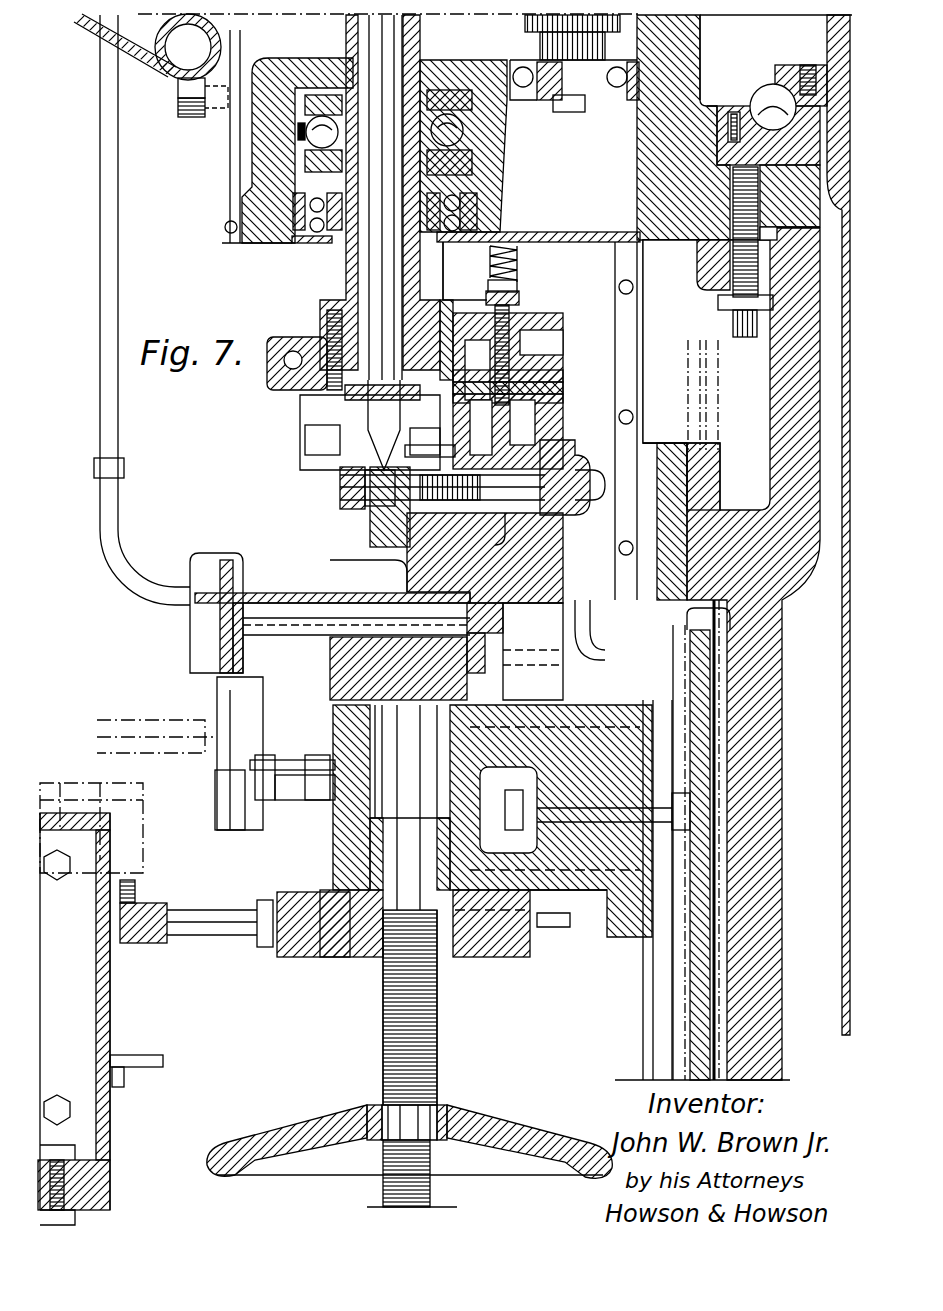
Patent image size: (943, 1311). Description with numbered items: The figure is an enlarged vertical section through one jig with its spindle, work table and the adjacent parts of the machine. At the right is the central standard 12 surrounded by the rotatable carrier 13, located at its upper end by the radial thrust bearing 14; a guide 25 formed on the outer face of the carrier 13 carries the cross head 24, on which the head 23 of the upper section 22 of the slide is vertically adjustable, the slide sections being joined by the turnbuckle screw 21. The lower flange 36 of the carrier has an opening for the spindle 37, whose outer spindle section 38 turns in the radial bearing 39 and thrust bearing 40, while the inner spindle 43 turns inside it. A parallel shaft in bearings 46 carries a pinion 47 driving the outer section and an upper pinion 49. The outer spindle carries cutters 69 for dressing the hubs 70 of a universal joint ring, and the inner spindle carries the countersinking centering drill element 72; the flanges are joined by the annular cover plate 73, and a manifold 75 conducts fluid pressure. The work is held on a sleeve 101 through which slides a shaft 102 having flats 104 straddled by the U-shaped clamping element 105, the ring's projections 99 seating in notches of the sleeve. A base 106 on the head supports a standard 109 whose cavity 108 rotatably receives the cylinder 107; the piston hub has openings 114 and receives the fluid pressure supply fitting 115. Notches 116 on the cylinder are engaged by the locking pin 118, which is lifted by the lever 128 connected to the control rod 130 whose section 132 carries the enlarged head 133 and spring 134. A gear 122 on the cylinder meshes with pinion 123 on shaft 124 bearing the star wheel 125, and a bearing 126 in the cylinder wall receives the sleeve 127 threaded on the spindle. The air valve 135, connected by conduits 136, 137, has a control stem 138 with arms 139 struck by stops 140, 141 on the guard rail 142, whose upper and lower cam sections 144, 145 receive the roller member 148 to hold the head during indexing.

The standard 12 is at (822, 552).
The rotatable carrier 13 is at (775, 632).
The radial thrust bearing 14 is at (765, 95).
The turnbuckle screw 21 is at (345, 1125).
The upper section of slide 22 is at (365, 968).
The head 23 is at (580, 915).
The cross head 24 is at (672, 786).
The guide 25 is at (660, 972).
The lower flange 36 is at (700, 38).
The spindle 37 is at (270, 343).
The outer spindle section 38 is at (312, 186).
The radial bearing 39 is at (296, 240).
The thrust bearing 40 is at (475, 150).
The inner spindle 43 is at (480, 180).
The bearings 46 is at (528, 88).
The pinion 47 is at (560, 30).
The pinion 49 is at (445, 460).
The cutters 69 is at (345, 435).
The hubs 70 is at (372, 540).
The countersinking centering drill element 72 is at (370, 445).
The annular cover plate 73 is at (253, 162).
The manifold 75 is at (185, 55).
The projections 99 is at (405, 540).
The sleeve 101 is at (410, 555).
The shaft 102 is at (442, 490).
The flats 104 is at (365, 500).
The U-shaped clamping element 105 is at (340, 480).
The base 106 is at (217, 688).
The cylinder 107 is at (563, 400).
The cavity 108 is at (563, 388).
The standard 109 is at (563, 376).
The openings 114 is at (566, 448).
The fluid pressure supply fitting 115 is at (560, 490).
The notches 116 is at (503, 608).
The locking pin 118 is at (520, 340).
The gear 122 is at (615, 555).
The pinion 123 is at (446, 651).
The shaft 124 is at (330, 600).
The star wheel 125 is at (220, 655).
The bearing 126 is at (292, 350).
The sleeve 127 is at (455, 325).
The lever 128 is at (510, 316).
The control rod 130 is at (520, 298).
The upper section of control rod 132 is at (518, 256).
The enlarged head 133 is at (518, 286).
The spring 134 is at (490, 258).
The air valve 135 is at (292, 766).
The conduit 136 is at (100, 400).
The conduit 137 is at (580, 629).
The control stem 138 is at (290, 800).
The control arms 139 is at (225, 800).
The operating stop 140 is at (200, 720).
The operating stop 141 is at (150, 820).
The guard rail 142 is at (100, 998).
The upper cam section 144 is at (125, 920).
The lower cam section 145 is at (158, 1055).
The roller member 148 is at (150, 945).